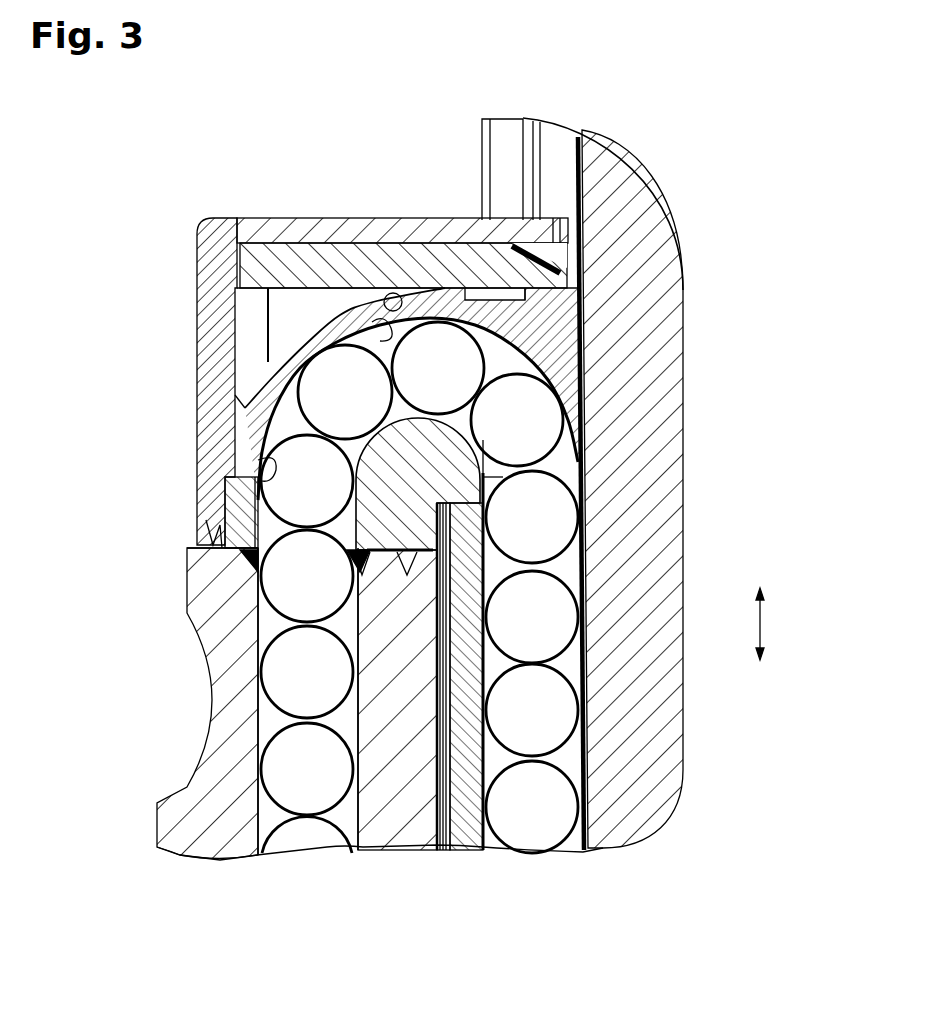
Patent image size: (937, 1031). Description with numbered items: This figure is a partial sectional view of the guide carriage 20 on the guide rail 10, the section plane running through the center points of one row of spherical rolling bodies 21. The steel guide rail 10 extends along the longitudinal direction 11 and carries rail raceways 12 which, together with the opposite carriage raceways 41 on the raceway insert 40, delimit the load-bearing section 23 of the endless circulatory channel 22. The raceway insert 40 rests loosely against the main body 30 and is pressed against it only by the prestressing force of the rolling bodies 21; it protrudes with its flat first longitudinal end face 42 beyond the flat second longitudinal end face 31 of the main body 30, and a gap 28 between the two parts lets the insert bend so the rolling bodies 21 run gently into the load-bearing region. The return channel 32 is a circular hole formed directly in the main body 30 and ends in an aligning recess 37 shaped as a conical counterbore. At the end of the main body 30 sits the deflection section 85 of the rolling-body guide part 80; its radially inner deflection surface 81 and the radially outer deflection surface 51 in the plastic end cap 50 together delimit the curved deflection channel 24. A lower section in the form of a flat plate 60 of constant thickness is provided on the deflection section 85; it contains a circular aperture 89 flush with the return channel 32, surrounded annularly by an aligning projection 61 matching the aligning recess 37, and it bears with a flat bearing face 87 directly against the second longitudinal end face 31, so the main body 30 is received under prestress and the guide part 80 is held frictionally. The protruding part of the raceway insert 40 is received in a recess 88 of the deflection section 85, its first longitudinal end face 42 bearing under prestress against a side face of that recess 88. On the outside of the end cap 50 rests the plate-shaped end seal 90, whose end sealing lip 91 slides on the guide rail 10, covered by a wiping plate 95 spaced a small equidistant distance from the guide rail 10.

The guide rail 10 is at (626, 198).
The longitudinal direction 11 is at (762, 633).
The rail raceways 12 is at (579, 170).
The guide carriage 20 is at (207, 752).
The main body 30 is at (205, 818).
The rolling bodies 21 is at (550, 521).
The circulatory channel 22 is at (472, 795).
The load-bearing section 23 is at (566, 756).
The curved deflection channel 24 is at (580, 334).
The gap 28 is at (560, 690).
The second longitudinal end face 31 is at (203, 540).
The return channel 32 is at (345, 815).
The aligning recess 37 is at (246, 563).
The raceway insert 40 is at (465, 815).
The carriage raceways 41 is at (518, 838).
The first longitudinal end face 42 is at (598, 418).
The end cap 50 is at (205, 263).
The radially outer deflection surface 51 is at (396, 292).
The flat plate 60 is at (240, 508).
The aligning projection 61 is at (246, 603).
The rolling-body guide part 80 is at (447, 315).
The deflection section 85 is at (430, 440).
The radially inner deflection surface 81 is at (268, 362).
The bearing face 87 is at (546, 563).
The recess 88 is at (550, 468).
The circular aperture 89 is at (258, 462).
The end seal 90 is at (256, 266).
The end sealing lip 91 is at (578, 266).
The wiping plate 95 is at (325, 236).